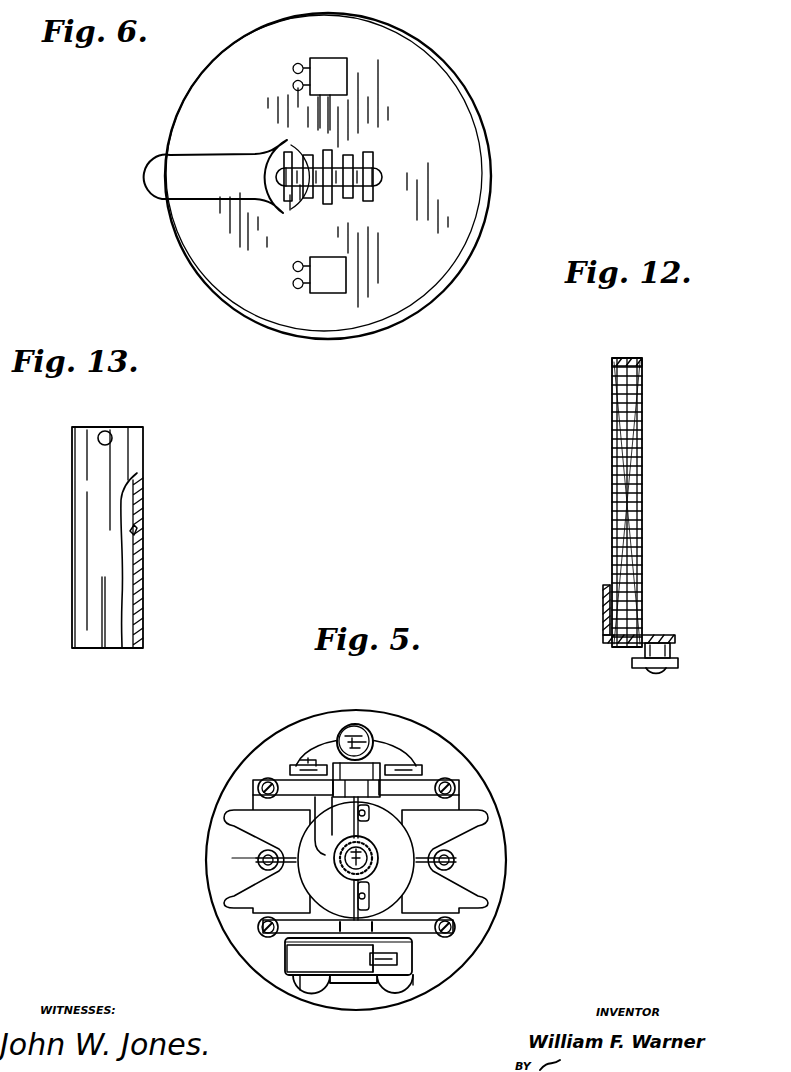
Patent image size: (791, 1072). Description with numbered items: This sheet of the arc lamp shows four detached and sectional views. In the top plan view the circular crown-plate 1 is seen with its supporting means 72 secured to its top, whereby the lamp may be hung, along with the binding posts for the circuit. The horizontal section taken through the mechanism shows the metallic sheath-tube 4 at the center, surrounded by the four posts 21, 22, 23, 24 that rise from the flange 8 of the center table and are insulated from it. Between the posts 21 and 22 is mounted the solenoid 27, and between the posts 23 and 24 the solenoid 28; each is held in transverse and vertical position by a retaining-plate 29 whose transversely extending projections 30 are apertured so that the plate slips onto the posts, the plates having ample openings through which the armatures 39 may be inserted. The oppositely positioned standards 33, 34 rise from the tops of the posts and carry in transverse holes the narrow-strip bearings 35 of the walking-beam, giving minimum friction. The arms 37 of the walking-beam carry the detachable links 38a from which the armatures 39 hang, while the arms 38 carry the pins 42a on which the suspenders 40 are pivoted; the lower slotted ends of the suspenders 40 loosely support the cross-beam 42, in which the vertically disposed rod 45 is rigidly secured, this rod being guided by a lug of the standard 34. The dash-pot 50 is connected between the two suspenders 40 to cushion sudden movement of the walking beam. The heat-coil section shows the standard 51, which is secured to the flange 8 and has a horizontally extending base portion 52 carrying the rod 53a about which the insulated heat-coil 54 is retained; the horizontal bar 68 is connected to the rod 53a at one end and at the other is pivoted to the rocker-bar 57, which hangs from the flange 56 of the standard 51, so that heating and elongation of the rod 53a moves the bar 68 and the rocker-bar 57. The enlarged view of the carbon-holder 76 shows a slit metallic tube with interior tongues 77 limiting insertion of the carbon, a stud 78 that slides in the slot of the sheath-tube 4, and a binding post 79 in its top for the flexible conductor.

In FIG. 6, the crown-plate 1 is at (317, 176).
In FIG. 6, the supporting means 72 is at (323, 152).
In FIG. 13, the carbon-holder 76 is at (75, 492).
In FIG. 5, the carbon-holder 76 is at (378, 851).
In FIG. 13, the tongues 77 is at (137, 529).
In FIG. 13, the stud 78 is at (111, 434).
In FIG. 12, the horizontal bar 68 is at (643, 365).
In FIG. 5, the horizontal bar 68 is at (348, 956).
In FIG. 12, the rod 53a is at (612, 446).
In FIG. 12, the heat-coil 54 is at (643, 486).
In FIG. 12, the standard 51 is at (603, 600).
In FIG. 5, the standard 51 is at (310, 936).
In FIG. 12, the base portion 52 is at (672, 636).
In FIG. 5, the base portion 52 is at (335, 1033).
In FIG. 12, the flange 8 is at (679, 663).
In FIG. 5, the flange 8 is at (356, 860).
In FIG. 5, the transversely extending projections 30 is at (226, 812).
In FIG. 5, the retaining-plates 29 is at (357, 823).
In FIG. 5, the post 22 is at (257, 786).
In FIG. 5, the post 23 is at (456, 788).
In FIG. 5, the solenoid 27 is at (264, 853).
In FIG. 5, the solenoid 28 is at (449, 855).
In FIG. 5, the arms 37 is at (230, 858).
In FIG. 5, the armatures 39 is at (258, 865).
In FIG. 5, the detachable links 38a is at (456, 858).
In FIG. 5, the sheath-tube 4 is at (340, 865).
In FIG. 5, the vertically disposed rod 45 is at (338, 800).
In FIG. 5, the narrow-strip bearings 35 is at (372, 811).
In FIG. 5, the binding post 79 is at (355, 860).
In FIG. 5, the cross-beam 42 is at (372, 768).
In FIG. 5, the suspenders 40 is at (306, 765).
In FIG. 5, the arms 38 is at (305, 765).
In FIG. 5, the pins 42a is at (408, 766).
In FIG. 5, the dash-pot 50 is at (358, 725).
In FIG. 5, the standard 34 is at (425, 790).
In FIG. 5, the standard 33 is at (300, 926).
In FIG. 5, the post 21 is at (262, 933).
In FIG. 5, the post 24 is at (456, 928).
In FIG. 5, the rocker-bar 57 is at (377, 965).
In FIG. 5, the flange 56 is at (400, 985).